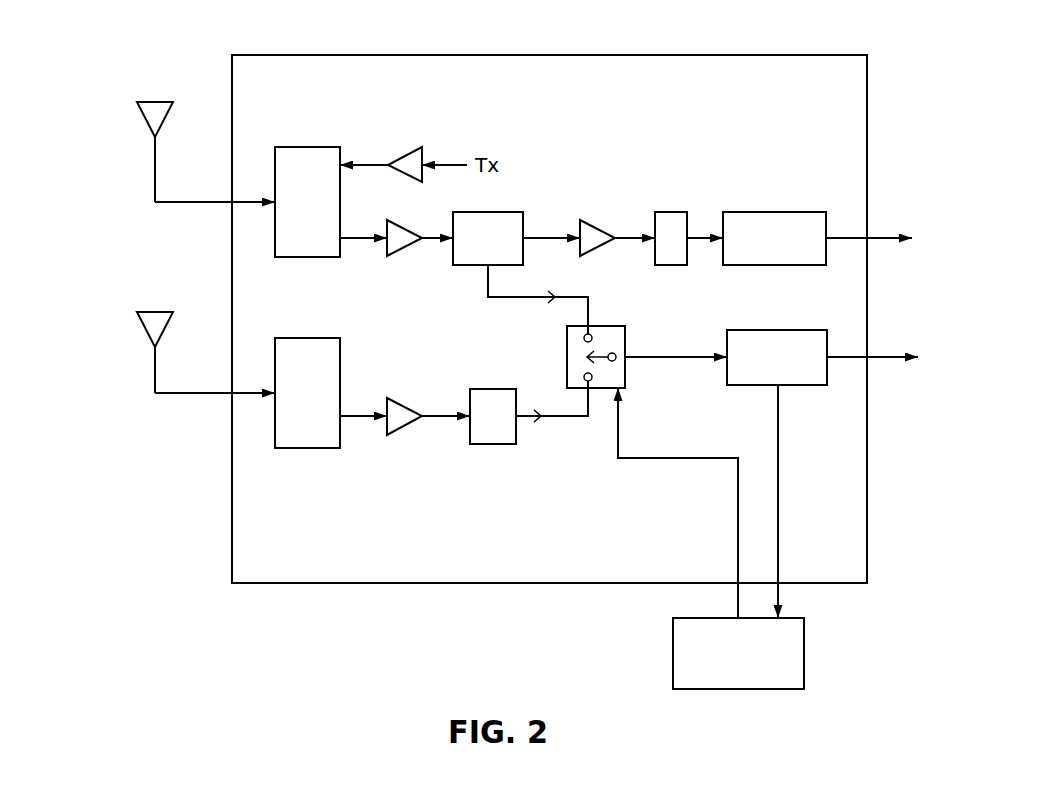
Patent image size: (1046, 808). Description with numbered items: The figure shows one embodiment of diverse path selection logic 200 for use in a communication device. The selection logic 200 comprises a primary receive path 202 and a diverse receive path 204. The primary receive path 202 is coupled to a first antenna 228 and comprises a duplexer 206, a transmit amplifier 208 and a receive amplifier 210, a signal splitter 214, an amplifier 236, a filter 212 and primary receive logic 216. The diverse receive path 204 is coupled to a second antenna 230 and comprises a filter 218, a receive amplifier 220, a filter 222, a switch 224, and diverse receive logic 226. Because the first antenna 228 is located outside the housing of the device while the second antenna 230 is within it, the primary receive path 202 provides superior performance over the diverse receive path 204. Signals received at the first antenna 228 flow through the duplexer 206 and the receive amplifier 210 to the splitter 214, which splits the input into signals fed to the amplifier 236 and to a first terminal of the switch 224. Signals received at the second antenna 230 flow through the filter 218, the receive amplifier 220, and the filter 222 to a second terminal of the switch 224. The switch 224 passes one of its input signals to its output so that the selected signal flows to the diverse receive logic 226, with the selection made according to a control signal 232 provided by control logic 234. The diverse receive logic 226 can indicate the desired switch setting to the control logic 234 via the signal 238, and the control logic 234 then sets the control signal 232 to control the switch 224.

The diverse path selection logic 200 is at (547, 55).
The primary receive path 202 is at (608, 145).
The diverse receive path 204 is at (548, 478).
The duplexer 206 is at (307, 152).
The transmit amplifier 208 is at (405, 150).
The receive amplifier 210 is at (402, 247).
The filter 212 is at (670, 212).
The signal splitter 214 is at (488, 212).
The primary receive logic 216 is at (775, 212).
The filter 218 is at (307, 340).
The receive amplifier 220 is at (392, 398).
The filter 222 is at (495, 444).
The switch 224 is at (567, 367).
The diverse receive logic 226 is at (778, 330).
The first antenna 228 is at (144, 124).
The second antenna 230 is at (144, 326).
The control signal 232 is at (737, 513).
The control logic 234 is at (804, 650).
The amplifier 236 is at (590, 222).
The signal 238 is at (778, 490).